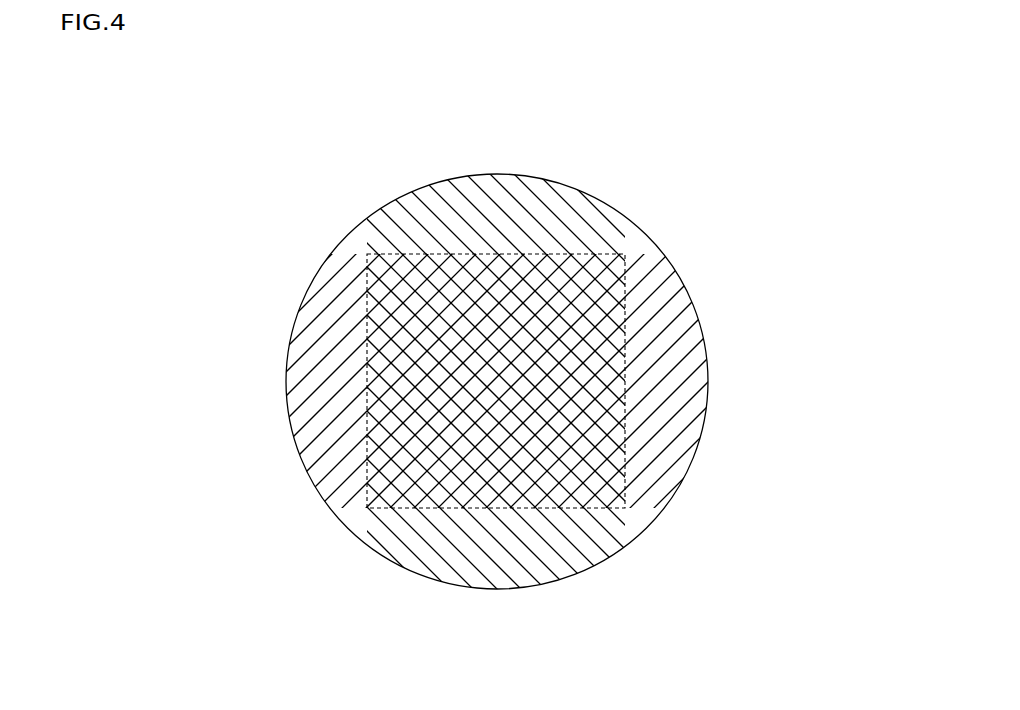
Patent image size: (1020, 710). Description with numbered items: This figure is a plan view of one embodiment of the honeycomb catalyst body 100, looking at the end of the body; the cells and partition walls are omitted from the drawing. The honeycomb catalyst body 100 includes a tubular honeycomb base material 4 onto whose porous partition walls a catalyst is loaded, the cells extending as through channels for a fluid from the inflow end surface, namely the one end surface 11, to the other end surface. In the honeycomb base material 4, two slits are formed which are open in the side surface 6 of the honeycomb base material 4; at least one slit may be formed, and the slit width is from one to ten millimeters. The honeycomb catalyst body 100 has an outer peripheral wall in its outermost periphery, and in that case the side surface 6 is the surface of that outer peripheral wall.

The honeycomb catalyst body 100 is at (867, 153).
The honeycomb base material 4 is at (652, 519).
The side surface 6 is at (522, 175).
The one end surface 11 is at (356, 516).